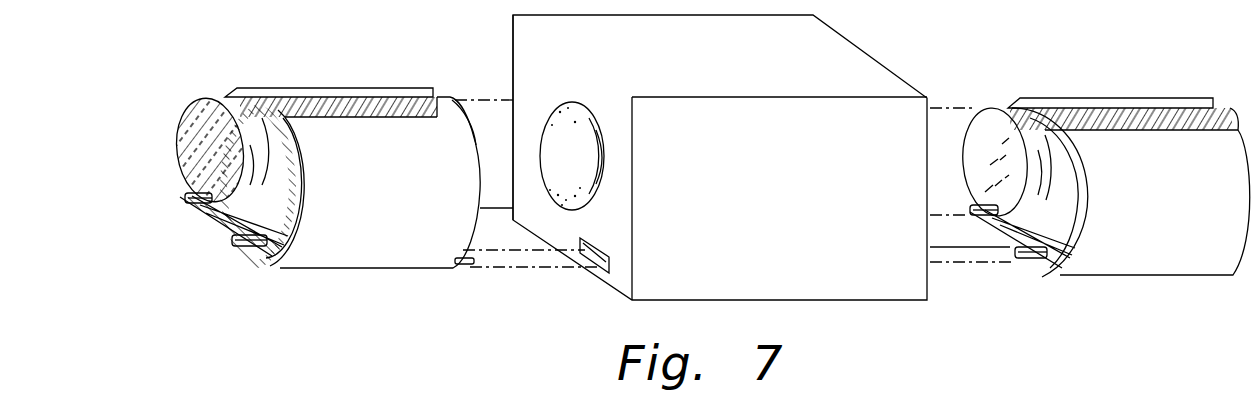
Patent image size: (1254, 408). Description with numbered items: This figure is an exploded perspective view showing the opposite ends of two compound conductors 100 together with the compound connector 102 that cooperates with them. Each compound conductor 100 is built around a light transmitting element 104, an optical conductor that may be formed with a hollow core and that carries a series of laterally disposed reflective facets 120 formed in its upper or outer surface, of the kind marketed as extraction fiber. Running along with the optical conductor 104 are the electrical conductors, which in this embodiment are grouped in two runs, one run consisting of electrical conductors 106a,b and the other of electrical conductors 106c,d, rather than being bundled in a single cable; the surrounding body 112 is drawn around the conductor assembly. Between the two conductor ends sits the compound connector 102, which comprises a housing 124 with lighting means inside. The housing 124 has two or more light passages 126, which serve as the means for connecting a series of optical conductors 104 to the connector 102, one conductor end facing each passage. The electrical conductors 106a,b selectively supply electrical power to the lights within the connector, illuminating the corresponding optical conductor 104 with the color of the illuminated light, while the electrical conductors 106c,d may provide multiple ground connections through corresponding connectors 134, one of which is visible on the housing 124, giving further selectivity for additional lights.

The compound conductor 100 is at (710, 208).
The compound connector 102 is at (724, 205).
The light transmitting element 104 is at (203, 97).
The electrical conductors 106a,b is at (192, 210).
The electrical conductors 106c,d is at (253, 248).
The cylindrical body 112 is at (397, 197).
The reflective facets 120 is at (393, 92).
The housing 124 is at (793, 202).
The light passages 126 is at (562, 125).
The connectors 134 is at (595, 272).